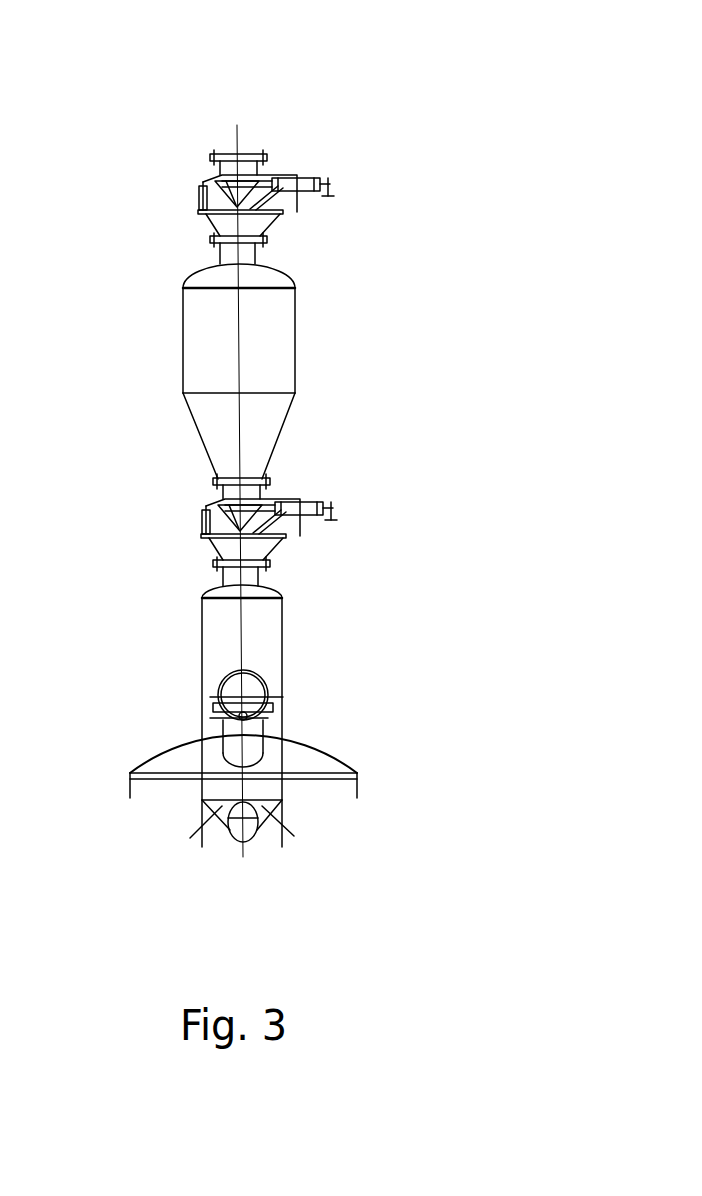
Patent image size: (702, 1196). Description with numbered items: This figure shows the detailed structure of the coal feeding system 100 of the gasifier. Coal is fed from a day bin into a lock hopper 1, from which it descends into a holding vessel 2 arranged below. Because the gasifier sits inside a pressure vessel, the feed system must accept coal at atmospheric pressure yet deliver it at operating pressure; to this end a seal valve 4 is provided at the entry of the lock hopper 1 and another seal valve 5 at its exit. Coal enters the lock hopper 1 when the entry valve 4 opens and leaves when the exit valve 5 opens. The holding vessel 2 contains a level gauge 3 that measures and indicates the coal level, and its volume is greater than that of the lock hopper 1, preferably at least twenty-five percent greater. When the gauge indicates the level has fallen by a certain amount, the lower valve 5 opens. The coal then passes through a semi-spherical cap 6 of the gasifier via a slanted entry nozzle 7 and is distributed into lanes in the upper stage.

The coal feeding system 100 is at (516, 116).
The lock hopper 1 is at (284, 371).
The holding vessel 2 is at (301, 707).
The level gauge 3 is at (166, 679).
The seal valve 4 is at (202, 198).
The seal valve 5 is at (206, 519).
The semi-spherical cap 6 is at (185, 751).
The entry nozzle 7 is at (319, 783).